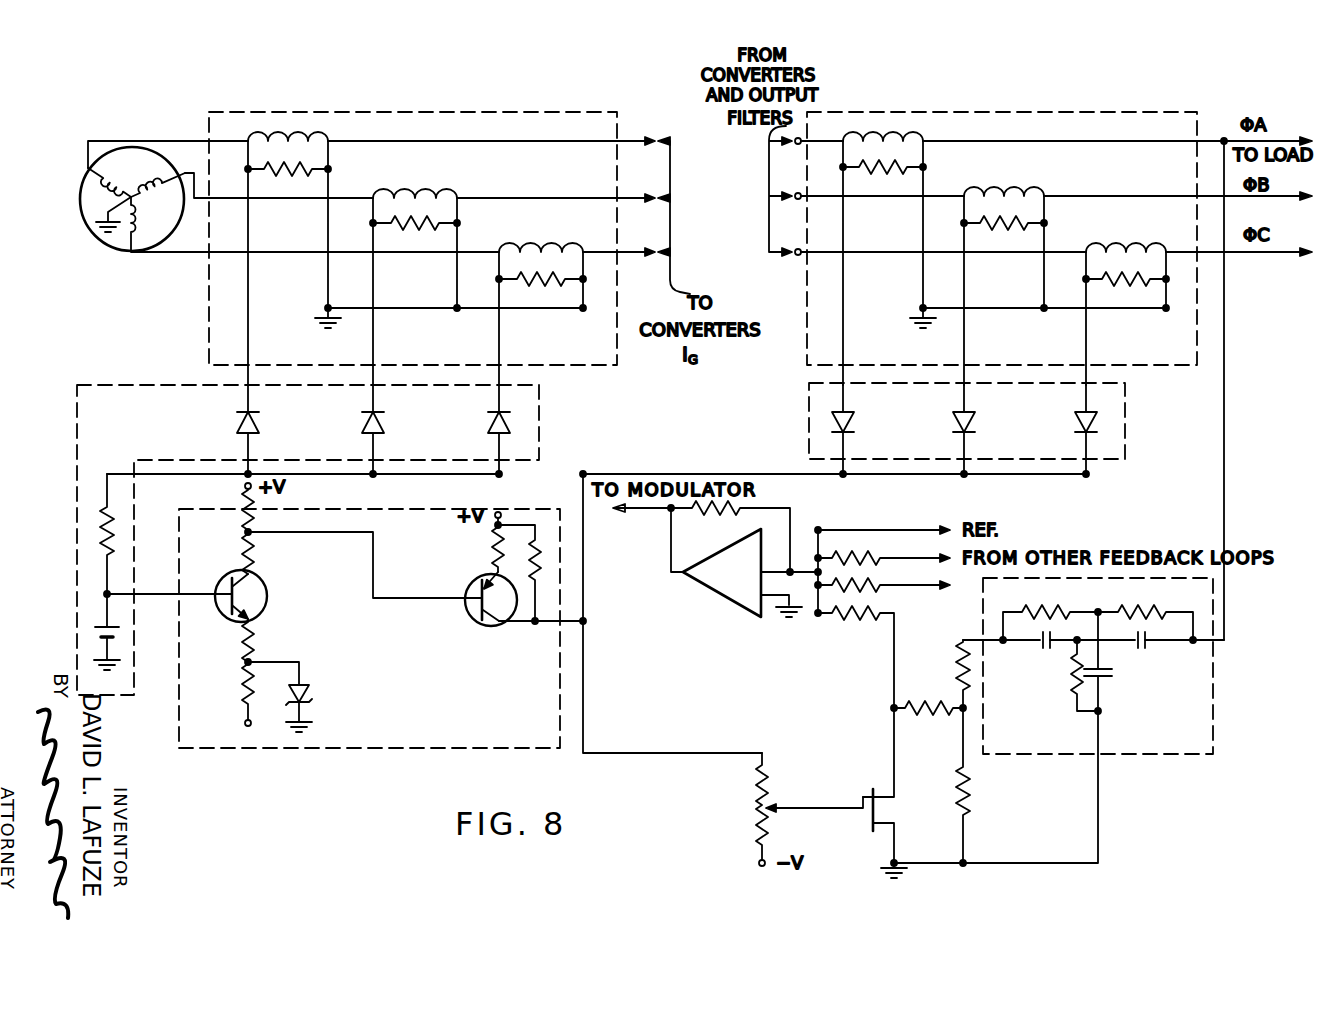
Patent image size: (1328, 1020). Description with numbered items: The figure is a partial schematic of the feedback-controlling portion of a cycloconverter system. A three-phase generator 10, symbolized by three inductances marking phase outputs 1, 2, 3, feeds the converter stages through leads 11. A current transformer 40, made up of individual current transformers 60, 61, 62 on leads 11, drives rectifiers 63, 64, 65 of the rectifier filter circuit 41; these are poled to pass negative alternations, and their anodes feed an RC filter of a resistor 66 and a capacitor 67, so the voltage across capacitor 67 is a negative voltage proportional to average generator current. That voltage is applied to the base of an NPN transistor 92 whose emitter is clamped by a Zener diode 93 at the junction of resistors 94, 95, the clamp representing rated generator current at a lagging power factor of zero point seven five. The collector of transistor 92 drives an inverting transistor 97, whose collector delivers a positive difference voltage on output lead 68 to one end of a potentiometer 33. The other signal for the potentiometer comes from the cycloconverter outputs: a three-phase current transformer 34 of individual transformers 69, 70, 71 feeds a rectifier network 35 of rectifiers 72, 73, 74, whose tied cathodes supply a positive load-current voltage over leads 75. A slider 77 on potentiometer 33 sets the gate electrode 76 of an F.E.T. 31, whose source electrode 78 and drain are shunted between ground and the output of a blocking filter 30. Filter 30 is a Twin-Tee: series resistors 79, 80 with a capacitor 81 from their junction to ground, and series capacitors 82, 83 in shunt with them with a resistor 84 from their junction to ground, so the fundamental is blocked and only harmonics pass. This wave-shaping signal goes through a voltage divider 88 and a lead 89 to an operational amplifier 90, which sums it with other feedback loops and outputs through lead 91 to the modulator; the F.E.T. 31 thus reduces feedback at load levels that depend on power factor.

The generator 10 is at (105, 180).
The phase output 1 is at (109, 172).
The phase output 2 is at (158, 190).
The phase output 3 is at (138, 224).
The leads 11 is at (629, 136).
The current transformer 40 is at (413, 234).
The current transformer 60 is at (322, 141).
The current transformer 61 is at (432, 190).
The current transformer 62 is at (550, 246).
The three-phase current transformer 34 is at (1002, 236).
The current transformer 69 is at (926, 148).
The current transformer 70 is at (1047, 204).
The current transformer 71 is at (1148, 251).
The rectifier network 35 is at (988, 428).
The rectifier 72 is at (848, 420).
The rectifier 73 is at (970, 420).
The rectifier 74 is at (1090, 420).
The leads 75 is at (760, 473).
The rectifier filter circuit 41 is at (292, 521).
The rectifier 63 is at (242, 422).
The rectifier 64 is at (368, 422).
The rectifier 65 is at (486, 422).
The resistor 66 is at (100, 510).
The capacitor 67 is at (100, 626).
The NPN transistor 92 is at (265, 603).
The resistor 94 is at (240, 638).
The resistor 95 is at (246, 692).
The Zener diode 93 is at (310, 690).
The transistor 97 is at (474, 618).
The output lead 68 is at (552, 628).
The lead 91 is at (662, 512).
The operational amplifier 90 is at (728, 600).
The lead 89 is at (894, 640).
The voltage divider 88 is at (943, 628).
The F.E.T. 31 is at (904, 698).
The blocking filter 30 is at (1093, 665).
The resistor 79 is at (1056, 610).
The resistor 80 is at (1147, 606).
The capacitor 82 is at (1042, 637).
The capacitor 83 is at (1147, 637).
The resistor 84 is at (1068, 682).
The capacitor 81 is at (1105, 680).
The potentiometer 33 is at (768, 778).
The gate electrode 76 is at (862, 790).
The slider 77 is at (883, 785).
The source electrode 78 is at (882, 826).